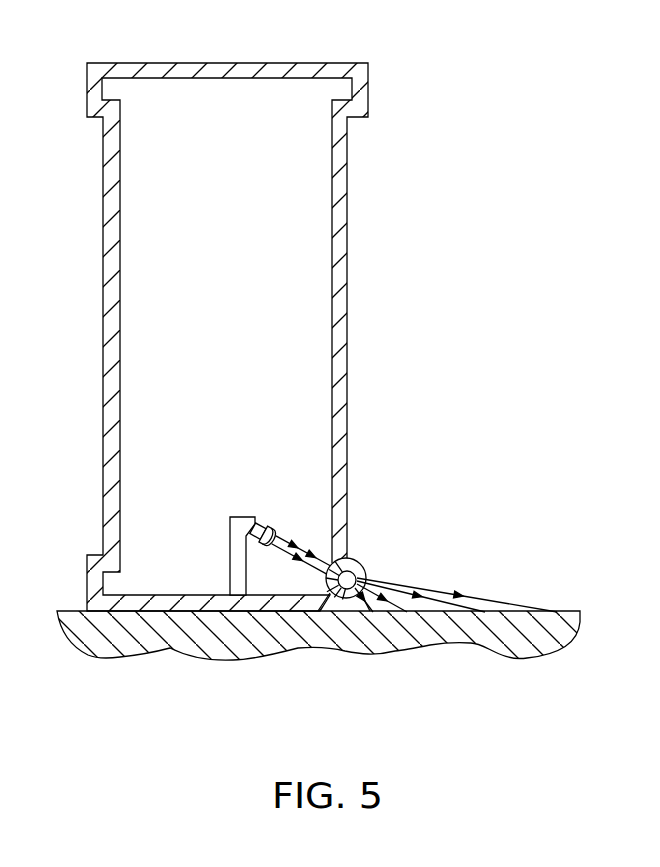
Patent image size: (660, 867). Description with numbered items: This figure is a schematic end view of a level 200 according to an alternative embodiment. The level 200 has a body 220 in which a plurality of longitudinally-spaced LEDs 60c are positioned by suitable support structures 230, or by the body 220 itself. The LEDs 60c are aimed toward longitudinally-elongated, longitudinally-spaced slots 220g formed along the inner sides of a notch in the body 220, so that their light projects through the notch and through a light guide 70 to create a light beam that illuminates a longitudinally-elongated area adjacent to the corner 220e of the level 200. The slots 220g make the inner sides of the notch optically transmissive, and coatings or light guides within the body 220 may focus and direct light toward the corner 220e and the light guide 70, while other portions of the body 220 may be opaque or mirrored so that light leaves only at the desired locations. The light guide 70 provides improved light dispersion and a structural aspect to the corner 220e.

The level 200 is at (322, 396).
The body 220 is at (348, 335).
The support structures 230 is at (228, 570).
The LEDs 60c is at (267, 523).
The light guide 70 is at (357, 571).
The slots 220g is at (314, 605).
The corner 220e is at (368, 623).